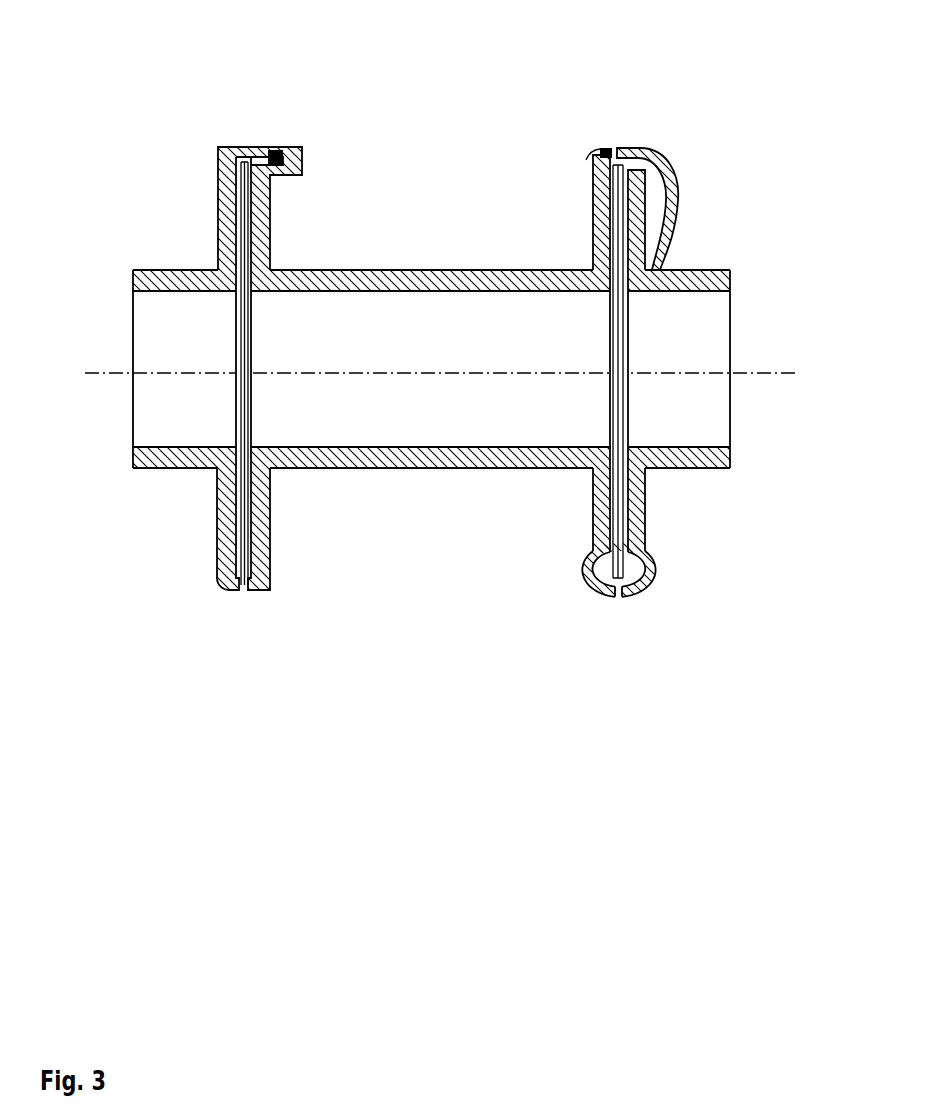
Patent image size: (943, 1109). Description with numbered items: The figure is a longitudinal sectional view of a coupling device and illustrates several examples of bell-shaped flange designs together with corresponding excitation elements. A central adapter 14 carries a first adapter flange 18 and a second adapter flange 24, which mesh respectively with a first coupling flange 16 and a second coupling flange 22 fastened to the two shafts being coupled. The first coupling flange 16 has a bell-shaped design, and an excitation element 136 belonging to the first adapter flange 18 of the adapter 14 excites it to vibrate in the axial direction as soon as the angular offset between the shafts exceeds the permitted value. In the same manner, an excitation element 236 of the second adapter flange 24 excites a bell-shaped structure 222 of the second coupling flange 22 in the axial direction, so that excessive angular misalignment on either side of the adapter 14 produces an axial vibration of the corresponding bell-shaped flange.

The adapter 14 is at (468, 482).
The first coupling flange 16 is at (228, 215).
The first adapter flange 18 is at (262, 215).
The excitation element 136 is at (281, 146).
The second adapter flange 24 is at (603, 220).
The second coupling flange 22 is at (652, 573).
The bell-shaped structure 222 is at (672, 220).
The excitation element 236 is at (603, 149).